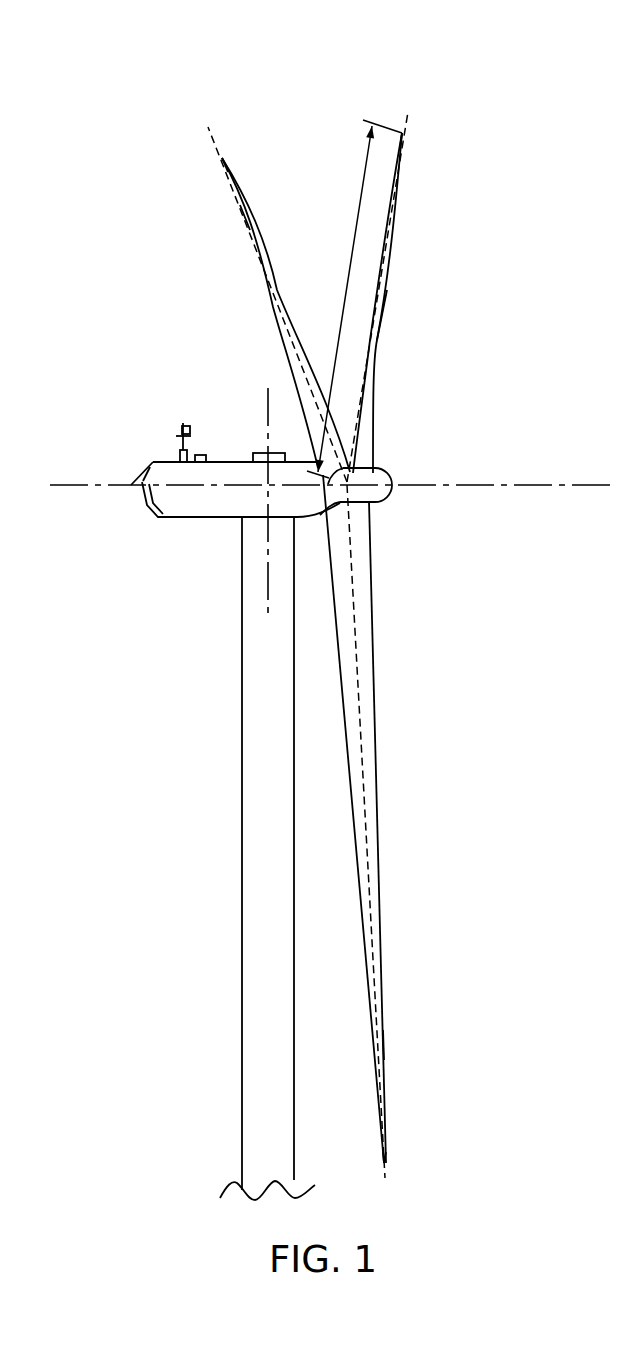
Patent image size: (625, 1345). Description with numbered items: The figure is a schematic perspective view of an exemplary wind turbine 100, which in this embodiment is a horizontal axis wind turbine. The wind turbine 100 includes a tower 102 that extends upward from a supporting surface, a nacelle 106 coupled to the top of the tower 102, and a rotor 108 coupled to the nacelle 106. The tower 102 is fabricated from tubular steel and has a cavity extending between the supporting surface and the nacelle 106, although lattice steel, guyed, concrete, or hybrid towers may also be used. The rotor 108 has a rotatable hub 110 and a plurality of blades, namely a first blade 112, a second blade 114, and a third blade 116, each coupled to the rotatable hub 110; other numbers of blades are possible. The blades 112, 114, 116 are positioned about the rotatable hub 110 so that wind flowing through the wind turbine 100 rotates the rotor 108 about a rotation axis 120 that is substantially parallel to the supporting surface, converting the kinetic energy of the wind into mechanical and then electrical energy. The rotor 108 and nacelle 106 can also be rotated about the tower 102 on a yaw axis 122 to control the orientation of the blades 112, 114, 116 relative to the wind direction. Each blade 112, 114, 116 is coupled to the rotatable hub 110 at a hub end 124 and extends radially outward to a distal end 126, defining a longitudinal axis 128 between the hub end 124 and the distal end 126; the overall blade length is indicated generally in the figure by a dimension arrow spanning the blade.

The wind turbine 100 is at (387, 68).
The tower 102 is at (242, 851).
The nacelle 106 is at (181, 520).
The rotor 108 is at (380, 526).
The rotatable hub 110 is at (393, 490).
The first blade 112 is at (403, 201).
The second blade 114 is at (252, 207).
The third blade 116 is at (379, 886).
The rotation axis 120 is at (503, 484).
The yaw axis 122 is at (268, 392).
The hub end 124 is at (372, 467).
The distal end 126 is at (225, 156).
The longitudinal axis 128 is at (233, 219).